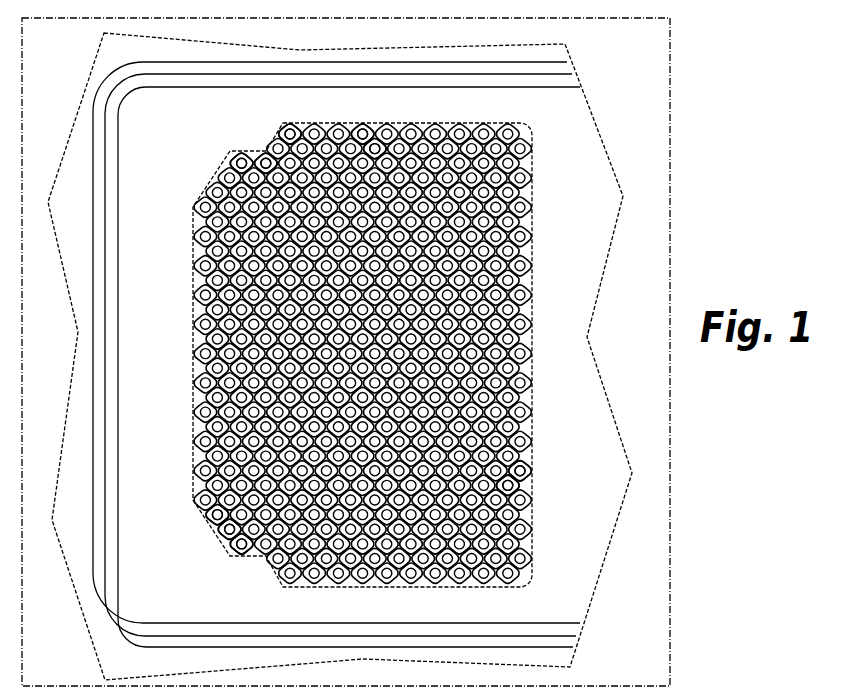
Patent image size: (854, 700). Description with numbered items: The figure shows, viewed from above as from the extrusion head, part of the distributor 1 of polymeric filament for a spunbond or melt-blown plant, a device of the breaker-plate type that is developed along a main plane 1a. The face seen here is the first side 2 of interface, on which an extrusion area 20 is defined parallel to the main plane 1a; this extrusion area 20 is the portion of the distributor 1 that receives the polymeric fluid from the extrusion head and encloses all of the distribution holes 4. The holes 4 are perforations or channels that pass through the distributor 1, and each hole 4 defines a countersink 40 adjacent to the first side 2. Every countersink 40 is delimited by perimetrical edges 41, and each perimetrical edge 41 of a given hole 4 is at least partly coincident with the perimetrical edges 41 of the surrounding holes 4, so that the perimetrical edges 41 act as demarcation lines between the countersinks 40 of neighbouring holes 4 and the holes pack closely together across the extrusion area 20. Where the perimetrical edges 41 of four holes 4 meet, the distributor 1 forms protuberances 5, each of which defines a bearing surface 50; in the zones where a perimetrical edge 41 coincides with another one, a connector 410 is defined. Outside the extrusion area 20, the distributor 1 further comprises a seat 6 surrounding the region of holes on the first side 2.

The distributor 1 is at (630, 107).
The main plane 1a is at (70, 666).
The first side 2 is at (84, 516).
The distribution holes 4 is at (542, 252).
The protuberances 5 is at (345, 328).
The seat 6 is at (178, 151).
The extrusion area 20 is at (193, 220).
The countersink 40 is at (233, 554).
The perimetrical edges 41 is at (285, 127).
The bearing surface 50 is at (510, 502).
The connector 410 is at (379, 123).